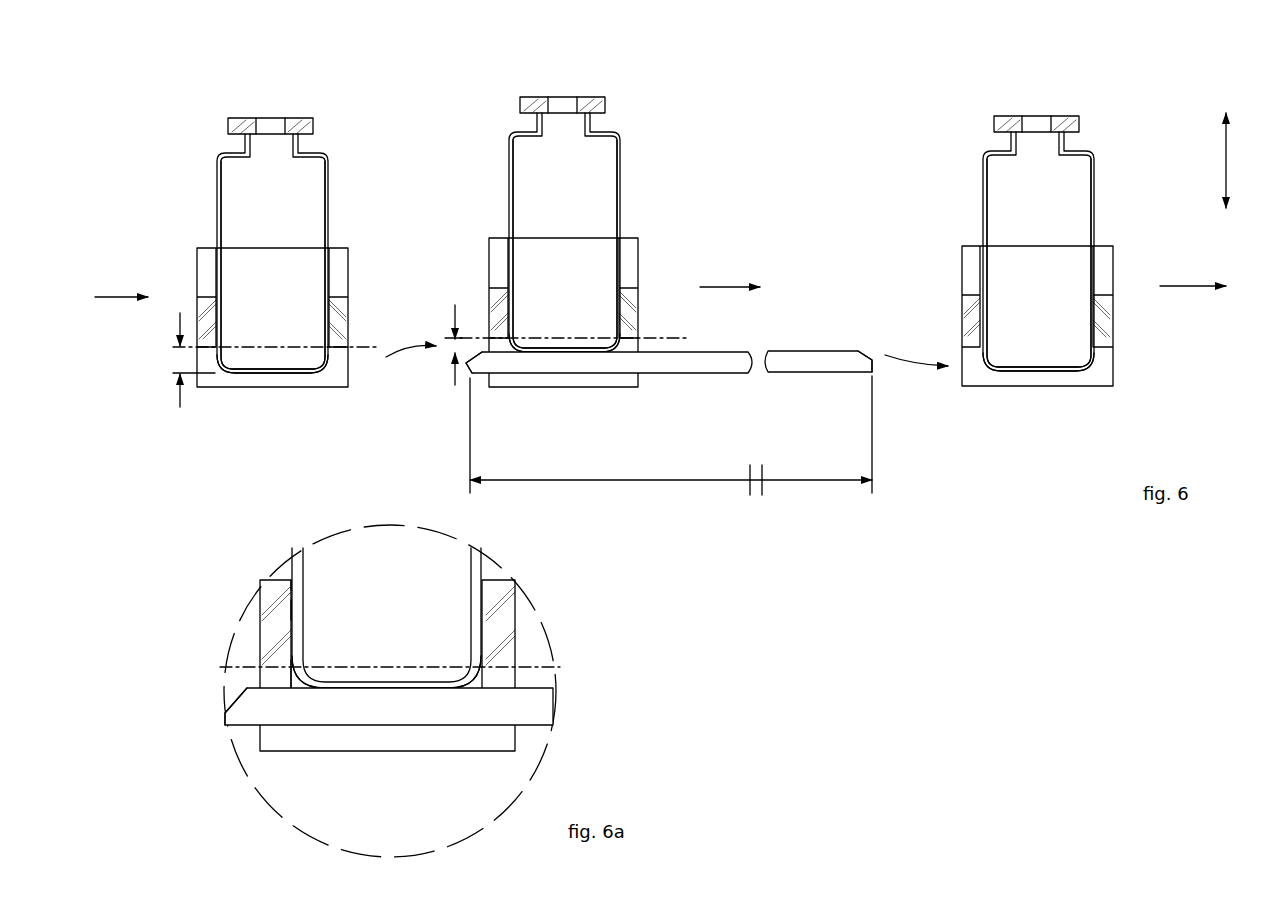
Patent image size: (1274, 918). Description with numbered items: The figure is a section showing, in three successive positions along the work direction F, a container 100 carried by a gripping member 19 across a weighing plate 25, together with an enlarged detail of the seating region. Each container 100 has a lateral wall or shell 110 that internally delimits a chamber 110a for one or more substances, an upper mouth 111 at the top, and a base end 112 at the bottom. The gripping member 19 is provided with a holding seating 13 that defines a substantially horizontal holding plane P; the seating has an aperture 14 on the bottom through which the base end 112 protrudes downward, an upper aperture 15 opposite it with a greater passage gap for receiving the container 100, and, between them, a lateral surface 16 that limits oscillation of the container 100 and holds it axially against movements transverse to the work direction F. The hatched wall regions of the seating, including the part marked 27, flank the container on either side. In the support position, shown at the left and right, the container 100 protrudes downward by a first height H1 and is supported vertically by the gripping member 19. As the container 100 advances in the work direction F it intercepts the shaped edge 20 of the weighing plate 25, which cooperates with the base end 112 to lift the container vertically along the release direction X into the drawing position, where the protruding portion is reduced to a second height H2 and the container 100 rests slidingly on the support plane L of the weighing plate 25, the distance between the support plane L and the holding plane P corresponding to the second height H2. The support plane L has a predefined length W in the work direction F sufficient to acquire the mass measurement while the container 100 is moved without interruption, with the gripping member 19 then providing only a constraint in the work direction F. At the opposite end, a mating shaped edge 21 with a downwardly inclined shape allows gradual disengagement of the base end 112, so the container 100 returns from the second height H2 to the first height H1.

In FIG. 6, the container 100 is at (658, 237).
In FIG. 6, the shell 110 is at (658, 272).
In FIG. 6A, the shell 110 is at (435, 657).
In FIG. 6, the chamber 110a is at (221, 190).
In FIG. 6A, the chamber 110a is at (472, 597).
In FIG. 6, the upper mouth 111 is at (243, 122).
In FIG. 6, the base end 112 is at (268, 374).
In FIG. 6A, the base end 112 is at (378, 690).
In FIG. 6, the holding seating 13 is at (666, 302).
In FIG. 6A, the holding seating 13 is at (362, 640).
In FIG. 6, the gripping member 19 is at (193, 304).
In FIG. 6A, the gripping member 19 is at (250, 648).
In FIG. 6, the holder side wall 27 is at (343, 312).
In FIG. 6, the weighing plate 25 is at (672, 359).
In FIG. 6A, the weighing plate 25 is at (360, 740).
In FIG. 6, the shaped edge 20 is at (470, 368).
In FIG. 6A, the shaped edge 20 is at (225, 714).
In FIG. 6, the shaped edge 21 is at (868, 359).
In FIG. 6A, the aperture 14 is at (298, 668).
In FIG. 6A, the upper aperture 15 is at (293, 582).
In FIG. 6A, the lateral surface 16 is at (290, 608).
In FIG. 6, the first height H1 is at (180, 360).
In FIG. 6, the second height H2 is at (453, 345).
In FIG. 6, the holding plane P is at (361, 347).
In FIG. 6A, the holding plane P is at (540, 667).
In FIG. 6, the support plane L is at (713, 352).
In FIG. 6A, the support plane L is at (541, 689).
In FIG. 6, the work direction F is at (659, 313).
In FIG. 6, the predefined length W is at (660, 457).
In FIG. 6, the release direction X is at (1229, 167).